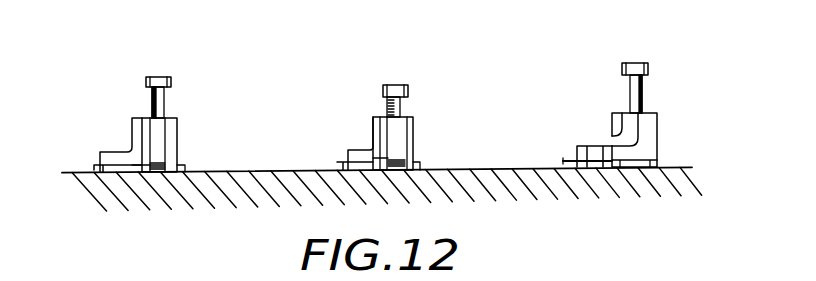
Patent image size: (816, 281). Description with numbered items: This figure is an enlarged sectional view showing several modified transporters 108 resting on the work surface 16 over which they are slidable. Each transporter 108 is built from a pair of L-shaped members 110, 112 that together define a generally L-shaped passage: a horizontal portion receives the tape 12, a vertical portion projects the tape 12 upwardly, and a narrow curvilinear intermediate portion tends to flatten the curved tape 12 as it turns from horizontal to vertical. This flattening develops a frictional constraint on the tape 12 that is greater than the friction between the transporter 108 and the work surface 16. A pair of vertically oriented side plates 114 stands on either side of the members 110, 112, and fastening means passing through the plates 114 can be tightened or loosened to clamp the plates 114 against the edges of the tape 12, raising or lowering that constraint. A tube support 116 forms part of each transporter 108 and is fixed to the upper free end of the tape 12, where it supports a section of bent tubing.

The tape 12 is at (161, 97).
The work surface 16 is at (497, 170).
The modified transporter 108 is at (177, 137).
The L-shaped member 110 is at (628, 130).
The L-shaped member 112 is at (160, 157).
The side plate 114 is at (134, 126).
The tube support 116 is at (162, 76).